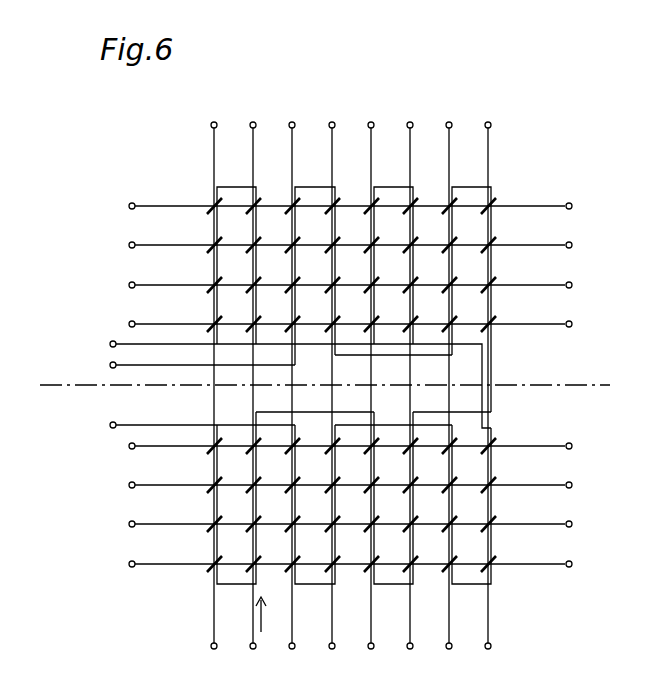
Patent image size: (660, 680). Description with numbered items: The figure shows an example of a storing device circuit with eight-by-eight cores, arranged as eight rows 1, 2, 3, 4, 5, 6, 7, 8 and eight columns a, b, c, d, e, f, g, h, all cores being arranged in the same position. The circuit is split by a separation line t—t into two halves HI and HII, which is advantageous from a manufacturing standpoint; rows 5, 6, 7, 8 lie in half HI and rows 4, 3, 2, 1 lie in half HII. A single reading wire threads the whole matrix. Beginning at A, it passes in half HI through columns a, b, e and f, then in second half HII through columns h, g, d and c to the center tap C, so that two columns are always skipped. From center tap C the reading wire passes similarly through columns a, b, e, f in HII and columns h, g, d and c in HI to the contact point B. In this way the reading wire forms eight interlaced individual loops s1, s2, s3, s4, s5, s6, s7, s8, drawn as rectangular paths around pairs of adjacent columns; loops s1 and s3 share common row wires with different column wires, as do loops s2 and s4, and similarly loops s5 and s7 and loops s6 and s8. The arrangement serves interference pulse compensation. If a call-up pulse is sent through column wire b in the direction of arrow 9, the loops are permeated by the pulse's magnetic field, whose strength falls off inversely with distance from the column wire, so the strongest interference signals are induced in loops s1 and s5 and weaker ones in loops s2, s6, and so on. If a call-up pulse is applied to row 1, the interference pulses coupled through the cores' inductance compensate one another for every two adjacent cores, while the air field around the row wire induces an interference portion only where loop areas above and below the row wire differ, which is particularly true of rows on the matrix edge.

The row 1 is at (344, 564).
The row 2 is at (344, 524).
The row 3 is at (344, 485).
The row 4 is at (344, 446).
The row 5 is at (344, 324).
The row 6 is at (344, 285).
The row 7 is at (344, 245).
The row 8 is at (344, 206).
The arrow 9 is at (265, 614).
The beginning of reading wire A is at (292, 382).
The contact point B is at (194, 365).
The center tap C is at (194, 425).
The separation line t is at (323, 385).
The column a is at (213, 396).
The column b is at (252, 396).
The column c is at (291, 396).
The column d is at (331, 396).
The column e is at (370, 396).
The column f is at (409, 396).
The column g is at (448, 396).
The column h is at (487, 396).
The individual loop s1 is at (236, 265).
The individual loop s2 is at (315, 276).
The individual loop s3 is at (393, 265).
The individual loop s4 is at (471, 299).
The individual loop s5 is at (236, 498).
The individual loop s6 is at (315, 504).
The individual loop s7 is at (393, 498).
The individual loop s8 is at (471, 504).
The first half HI is at (601, 264).
The second half HII is at (603, 502).